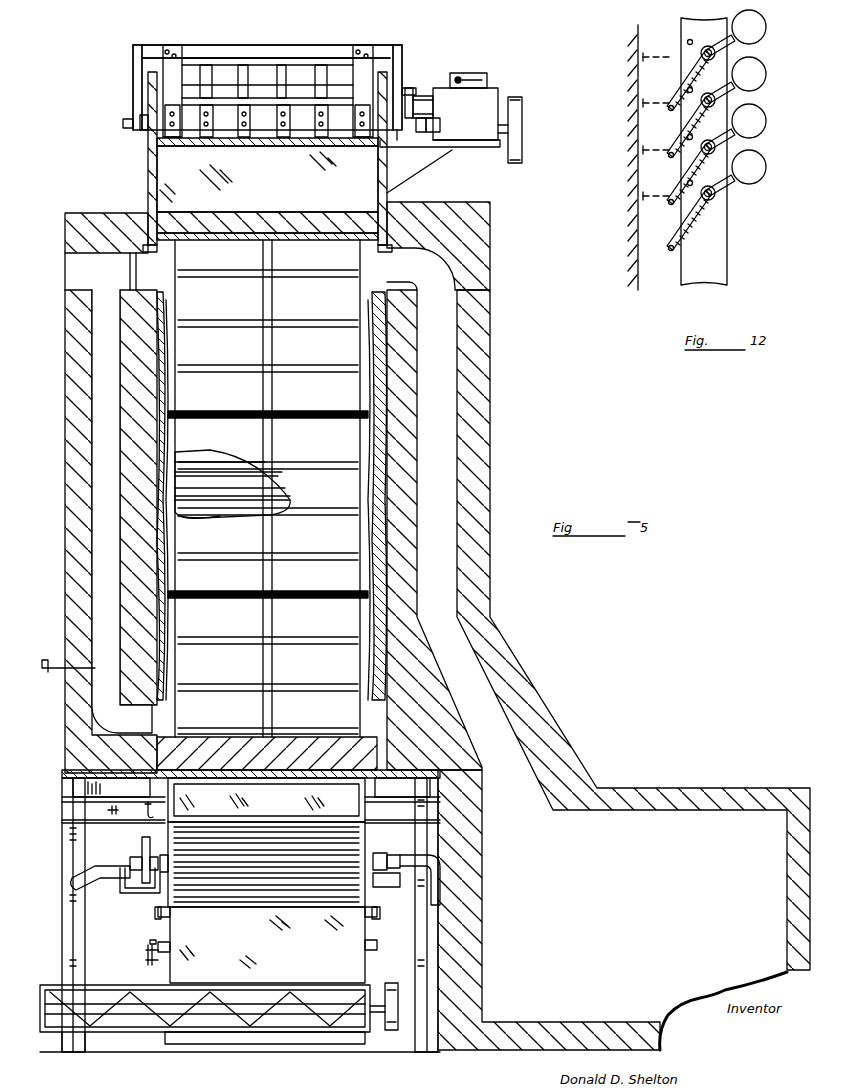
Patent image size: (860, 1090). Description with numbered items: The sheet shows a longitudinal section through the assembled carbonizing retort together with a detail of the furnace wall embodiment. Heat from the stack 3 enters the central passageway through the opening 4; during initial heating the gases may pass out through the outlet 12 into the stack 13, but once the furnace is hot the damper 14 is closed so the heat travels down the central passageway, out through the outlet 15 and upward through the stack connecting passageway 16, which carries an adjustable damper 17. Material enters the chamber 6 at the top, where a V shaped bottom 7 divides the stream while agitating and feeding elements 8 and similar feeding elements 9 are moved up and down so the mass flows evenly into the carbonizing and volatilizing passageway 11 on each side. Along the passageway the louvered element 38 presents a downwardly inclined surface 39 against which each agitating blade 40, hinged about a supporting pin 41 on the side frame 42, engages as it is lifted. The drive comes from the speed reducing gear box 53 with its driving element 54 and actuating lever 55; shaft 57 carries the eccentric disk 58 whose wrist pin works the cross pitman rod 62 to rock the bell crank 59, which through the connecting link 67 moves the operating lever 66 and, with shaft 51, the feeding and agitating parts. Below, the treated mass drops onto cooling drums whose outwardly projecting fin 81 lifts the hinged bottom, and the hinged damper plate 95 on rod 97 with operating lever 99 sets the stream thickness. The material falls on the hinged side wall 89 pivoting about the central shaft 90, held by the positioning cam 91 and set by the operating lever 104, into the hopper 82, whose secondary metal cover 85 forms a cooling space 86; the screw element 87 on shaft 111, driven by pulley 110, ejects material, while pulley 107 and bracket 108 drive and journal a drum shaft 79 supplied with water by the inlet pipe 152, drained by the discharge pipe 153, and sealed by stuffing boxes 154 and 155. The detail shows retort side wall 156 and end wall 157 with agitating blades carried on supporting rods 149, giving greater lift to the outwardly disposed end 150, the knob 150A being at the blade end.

In FIG. 5, the stack 3 is at (452, 445).
In FIG. 5, the opening 4 is at (430, 258).
In FIG. 5, the chamber 6 is at (338, 80).
In FIG. 5, the V shaped bottom 7 is at (170, 165).
In FIG. 5, the agitating and feeding elements 8 is at (248, 75).
In FIG. 5, the feeding elements 9 is at (283, 130).
In FIG. 5, the carbonizing and volatilizing passageway 11 is at (170, 468).
In FIG. 5, the outlet 12 is at (147, 258).
In FIG. 5, the stack 13 is at (78, 262).
In FIG. 5, the damper 14 is at (130, 274).
In FIG. 5, the outlet 15 is at (118, 730).
In FIG. 5, the stack connecting passageway 16 is at (95, 552).
In FIG. 5, the adjustable damper 17 is at (60, 672).
In FIG. 5, the louvered element 38 is at (178, 462).
In FIG. 5, the downwardly inclined surface 39 is at (255, 492).
In FIG. 5, the agitating blade 40 is at (180, 486).
In FIG. 12, the supporting pin 41 is at (735, 128).
In FIG. 12, the side frame 42 is at (728, 236).
In FIG. 5, the shaft 51 is at (122, 124).
In FIG. 5, the speed reducing gear box 53 is at (498, 92).
In FIG. 5, the driving element 54 is at (522, 110).
In FIG. 5, the actuating lever 55 is at (482, 74).
In FIG. 5, the shaft 57 is at (442, 115).
In FIG. 5, the eccentric disk 58 is at (428, 122).
In FIG. 5, the bell crank 59 is at (413, 92).
In FIG. 5, the cross pitman rod 62 is at (435, 104).
In FIG. 5, the operating lever 66 is at (200, 52).
In FIG. 5, the connecting link 67 is at (133, 84).
In FIG. 5, the shaft 79 is at (382, 853).
In FIG. 5, the outwardly projecting fin 81 is at (215, 865).
In FIG. 5, the hopper 82 is at (470, 805).
In FIG. 5, the secondary metal cover 85 is at (320, 1032).
In FIG. 5, the space 86 is at (200, 1032).
In FIG. 5, the screw element 87 is at (160, 1015).
In FIG. 5, the hinged side wall 89 is at (410, 965).
In FIG. 5, the central shaft 90 is at (377, 910).
In FIG. 5, the positioning cam 91 is at (245, 855).
In FIG. 5, the hinged damper plate 95 is at (305, 765).
In FIG. 5, the rod 97 is at (145, 783).
In FIG. 5, the operating lever 99 is at (145, 811).
In FIG. 5, the operating lever 104 is at (146, 950).
In FIG. 5, the pulley 107 is at (190, 812).
In FIG. 5, the bracket 108 is at (155, 910).
In FIG. 5, the pulley 110 is at (390, 1032).
In FIG. 5, the shaft 111 is at (262, 1020).
In FIG. 12, the supporting rod 149 is at (686, 43).
In FIG. 12, the outwardly disposed end 150 is at (669, 155).
In FIG. 12, the knob 150A is at (766, 167).
In FIG. 5, the inlet pipe 152 is at (102, 880).
In FIG. 5, the discharge pipe 153 is at (442, 890).
In FIG. 5, the stuffing box 154 is at (418, 868).
In FIG. 5, the stuffing box 155 is at (142, 858).
In FIG. 5, the side wall 156 is at (348, 338).
In FIG. 12, the side wall 156 is at (636, 130).
In FIG. 5, the end wall 157 is at (165, 346).